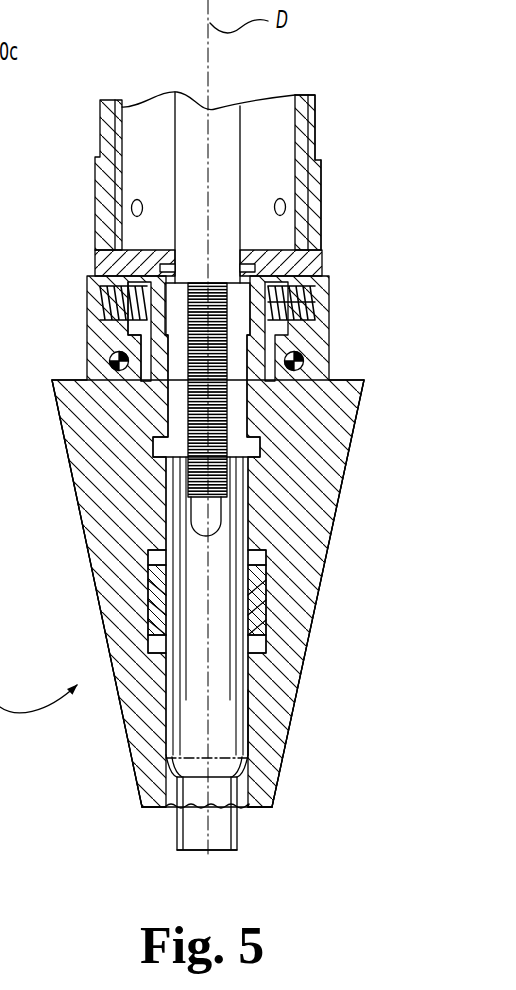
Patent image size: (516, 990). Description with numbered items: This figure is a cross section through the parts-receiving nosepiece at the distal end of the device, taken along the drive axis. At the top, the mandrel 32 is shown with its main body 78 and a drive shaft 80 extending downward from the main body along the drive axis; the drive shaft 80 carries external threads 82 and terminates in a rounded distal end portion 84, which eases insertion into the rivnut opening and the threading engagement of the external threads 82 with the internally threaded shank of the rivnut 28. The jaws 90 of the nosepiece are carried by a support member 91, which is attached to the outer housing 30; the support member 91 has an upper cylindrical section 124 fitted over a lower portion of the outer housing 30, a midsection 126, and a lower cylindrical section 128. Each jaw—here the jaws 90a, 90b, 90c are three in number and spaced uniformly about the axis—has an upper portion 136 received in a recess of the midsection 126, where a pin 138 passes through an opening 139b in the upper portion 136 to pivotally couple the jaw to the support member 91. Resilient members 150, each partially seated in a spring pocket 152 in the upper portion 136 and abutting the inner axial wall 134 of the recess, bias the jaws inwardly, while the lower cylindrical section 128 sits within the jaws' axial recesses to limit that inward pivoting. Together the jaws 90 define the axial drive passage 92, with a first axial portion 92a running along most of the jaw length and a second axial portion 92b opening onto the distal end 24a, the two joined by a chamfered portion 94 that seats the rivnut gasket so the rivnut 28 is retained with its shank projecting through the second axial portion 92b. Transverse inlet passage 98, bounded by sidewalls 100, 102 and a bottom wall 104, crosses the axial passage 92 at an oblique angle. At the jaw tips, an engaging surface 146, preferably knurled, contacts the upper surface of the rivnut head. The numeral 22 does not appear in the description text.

The dispensing gun housing 22 is at (90, 127).
The mandrel 32 is at (168, 133).
The outer housing 30 is at (324, 132).
The main body 78 is at (320, 181).
The upper cylindrical section 124 is at (323, 201).
The support member 91 is at (328, 218).
The inner axial wall 134 is at (278, 280).
The midsection 126 is at (323, 272).
The spring pocket 152 is at (318, 300).
The resilient member 150 is at (98, 258).
The upper portion 136 is at (329, 357).
The jaws 90 is at (350, 376).
The opening 139b is at (140, 320).
The pin 138 is at (108, 360).
The lower cylindrical section 128 is at (163, 410).
The drive shaft 80 is at (240, 421).
The external threads 82 is at (230, 490).
The rounded distal end portion 84 is at (216, 540).
The jaw 90b is at (88, 530).
The jaw 90a is at (335, 535).
The sidewall 100 is at (152, 582).
The transverse inlet passage 98 is at (275, 592).
The sidewall 102 is at (150, 606).
The bottom wall 104 is at (150, 630).
The axial drive passage 92 is at (192, 694).
The first axial portion 92a is at (250, 713).
The jaw 90c is at (250, 759).
The chamfered portion 94 is at (176, 758).
The engaging surface 146 is at (170, 806).
The distal end 24a is at (268, 812).
The rivnut 28 is at (172, 836).
The second axial portion 92b is at (232, 806).